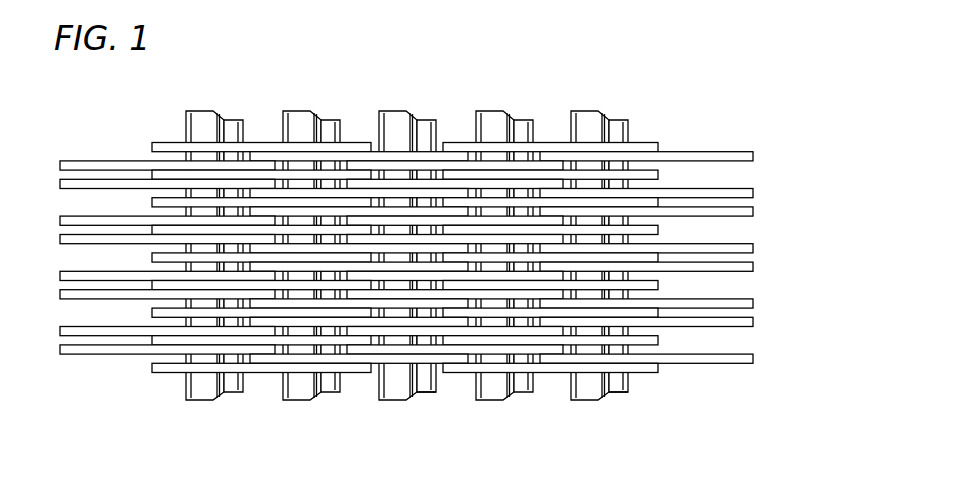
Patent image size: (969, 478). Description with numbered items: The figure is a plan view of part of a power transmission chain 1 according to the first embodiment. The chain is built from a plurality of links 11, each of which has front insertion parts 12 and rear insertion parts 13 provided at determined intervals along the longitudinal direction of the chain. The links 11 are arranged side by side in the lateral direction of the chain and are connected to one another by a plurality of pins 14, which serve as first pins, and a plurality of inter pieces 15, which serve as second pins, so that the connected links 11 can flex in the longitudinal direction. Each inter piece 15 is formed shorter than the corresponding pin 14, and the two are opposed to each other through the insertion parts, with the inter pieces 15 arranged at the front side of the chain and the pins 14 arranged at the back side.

The power transmission chain 1 is at (676, 125).
The link 11 is at (162, 368).
The front insertion part 12 is at (432, 362).
The rear insertion part 13 is at (428, 282).
The pin 14 is at (205, 380).
The inter piece 15 is at (233, 378).